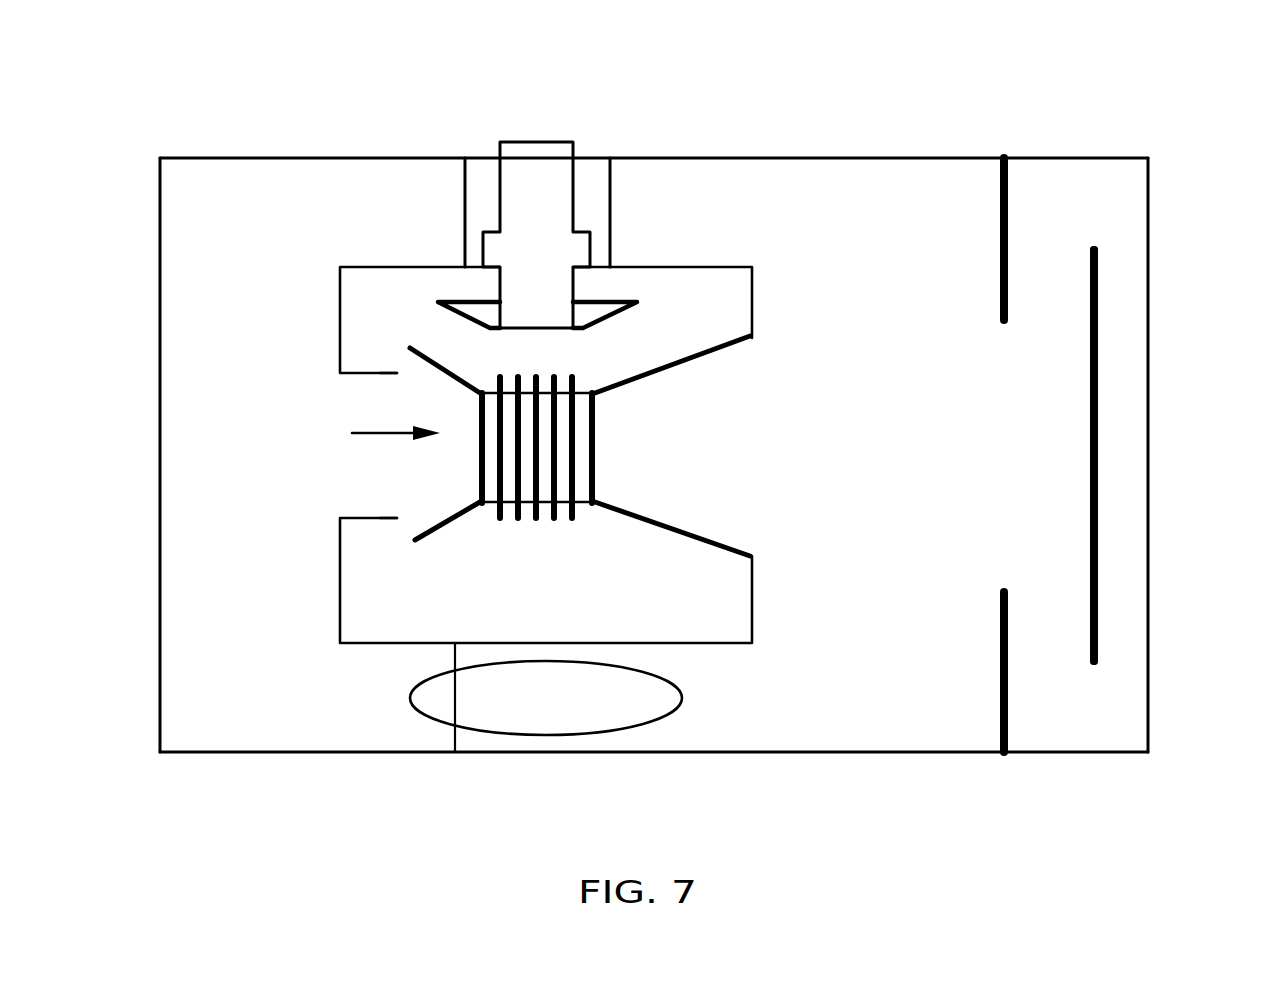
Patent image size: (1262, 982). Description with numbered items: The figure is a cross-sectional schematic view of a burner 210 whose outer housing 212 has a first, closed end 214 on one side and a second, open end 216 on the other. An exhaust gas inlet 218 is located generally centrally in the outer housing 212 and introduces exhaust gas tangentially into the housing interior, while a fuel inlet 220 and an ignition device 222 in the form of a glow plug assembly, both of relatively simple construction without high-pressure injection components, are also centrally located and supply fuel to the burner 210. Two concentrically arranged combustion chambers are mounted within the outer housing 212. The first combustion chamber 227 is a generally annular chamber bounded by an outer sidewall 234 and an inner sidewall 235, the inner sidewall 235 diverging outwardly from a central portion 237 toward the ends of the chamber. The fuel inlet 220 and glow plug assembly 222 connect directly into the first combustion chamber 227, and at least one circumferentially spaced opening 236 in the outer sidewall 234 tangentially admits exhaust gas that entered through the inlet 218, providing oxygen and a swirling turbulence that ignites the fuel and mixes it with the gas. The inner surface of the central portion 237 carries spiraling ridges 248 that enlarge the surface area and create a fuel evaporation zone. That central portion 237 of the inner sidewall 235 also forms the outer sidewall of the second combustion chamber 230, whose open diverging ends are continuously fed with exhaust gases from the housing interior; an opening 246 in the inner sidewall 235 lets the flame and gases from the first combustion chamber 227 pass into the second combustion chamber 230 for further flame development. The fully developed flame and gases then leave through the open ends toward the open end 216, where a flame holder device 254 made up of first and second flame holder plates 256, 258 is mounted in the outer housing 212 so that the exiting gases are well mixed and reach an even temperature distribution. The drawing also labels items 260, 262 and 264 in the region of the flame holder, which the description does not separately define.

The burner 210 is at (1097, 100).
The outer housing 212 is at (787, 158).
The first, closed end 214 is at (160, 158).
The second, open end 216 is at (1150, 158).
The exhaust gas inlet 218 is at (617, 693).
The fuel inlet 220 is at (537, 140).
The ignition device 222 is at (488, 227).
The first combustion chamber 227 is at (722, 267).
The second combustion chamber 230 is at (480, 493).
The outer sidewall 234 is at (398, 265).
The inner sidewall 235 is at (667, 373).
The opening 236 is at (603, 309).
The central portion 237 is at (597, 397).
The opening 246 is at (398, 370).
The spiraling ridges 248 is at (577, 510).
The flame holder device 254 is at (1127, 760).
The first flame holder plate 256 is at (1000, 659).
The second flame holder plate 258 is at (1090, 569).
The upper partition 260 is at (1003, 320).
The circuit board 262 is at (1090, 471).
The circuit board upper portion 264 is at (1093, 250).